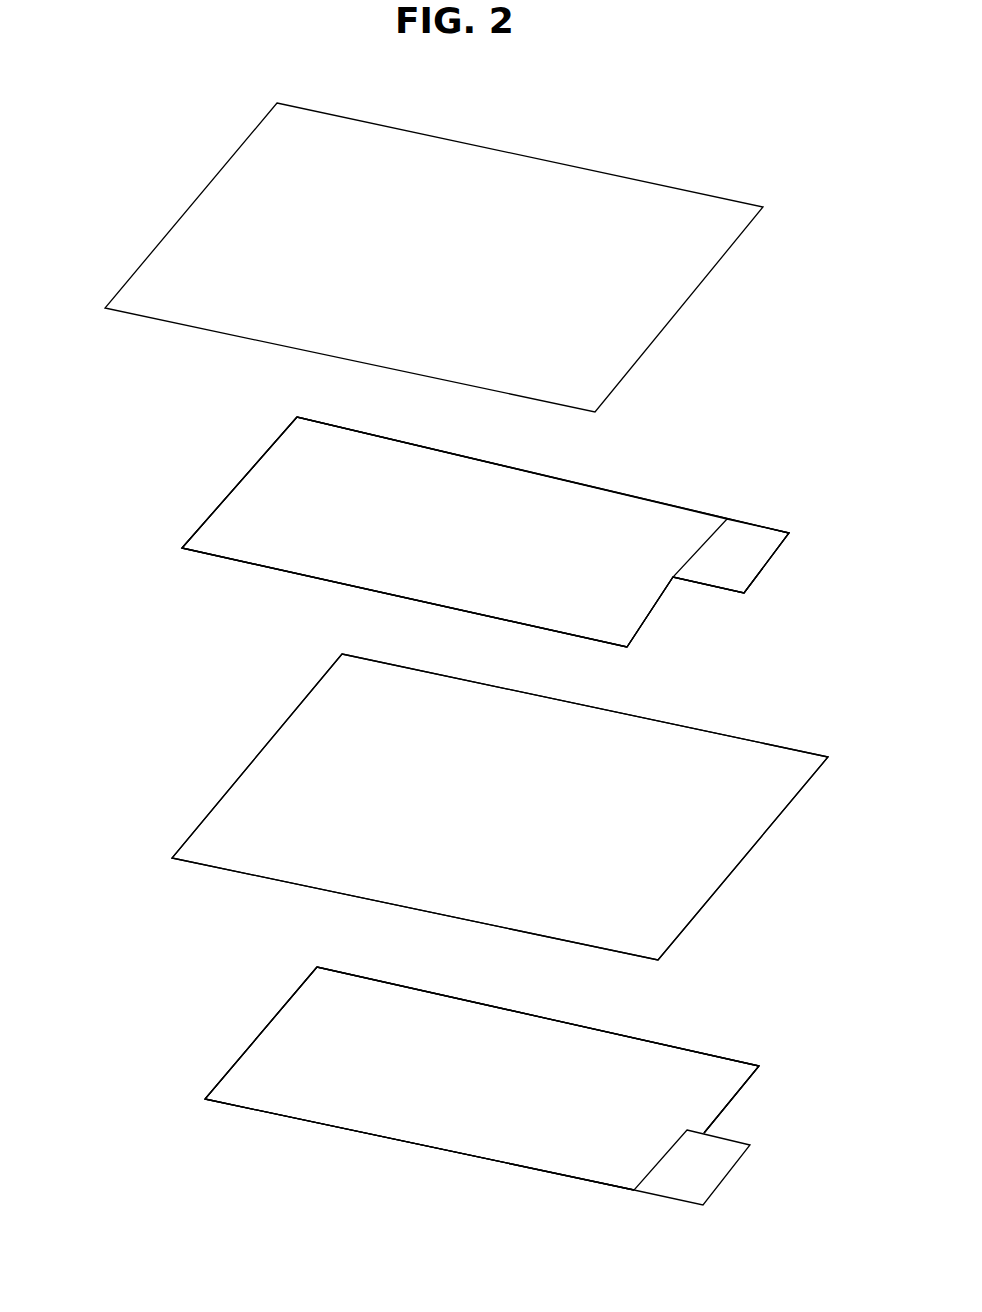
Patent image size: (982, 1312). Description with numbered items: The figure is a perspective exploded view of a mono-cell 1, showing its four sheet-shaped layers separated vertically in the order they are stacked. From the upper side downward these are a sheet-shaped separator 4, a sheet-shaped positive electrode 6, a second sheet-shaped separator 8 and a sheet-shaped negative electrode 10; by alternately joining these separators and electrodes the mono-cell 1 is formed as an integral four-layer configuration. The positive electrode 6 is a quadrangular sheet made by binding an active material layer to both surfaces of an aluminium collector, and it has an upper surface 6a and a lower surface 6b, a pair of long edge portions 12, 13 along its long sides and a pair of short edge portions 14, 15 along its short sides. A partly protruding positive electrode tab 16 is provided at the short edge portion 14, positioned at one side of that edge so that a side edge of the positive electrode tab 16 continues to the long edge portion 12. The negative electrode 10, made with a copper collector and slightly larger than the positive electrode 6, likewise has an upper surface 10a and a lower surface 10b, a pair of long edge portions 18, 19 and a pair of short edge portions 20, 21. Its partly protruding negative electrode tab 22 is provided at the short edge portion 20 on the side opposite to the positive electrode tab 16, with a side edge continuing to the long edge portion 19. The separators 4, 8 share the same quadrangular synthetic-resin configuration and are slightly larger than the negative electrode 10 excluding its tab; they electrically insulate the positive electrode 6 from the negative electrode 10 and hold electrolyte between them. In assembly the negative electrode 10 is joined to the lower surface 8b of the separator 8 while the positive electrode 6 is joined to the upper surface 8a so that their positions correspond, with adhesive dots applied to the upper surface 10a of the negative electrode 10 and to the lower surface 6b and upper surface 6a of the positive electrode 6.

The mono-cell 1 is at (768, 165).
The separator 4 is at (240, 165).
The positive electrode 6 is at (214, 532).
The upper surface of the positive electrode 6a is at (485, 532).
The lower surface of the positive electrode 6b is at (228, 557).
The separator 8 is at (275, 768).
The upper surface of the separator 8a is at (500, 807).
The lower surface of the separator 8b is at (230, 870).
The negative electrode 10 is at (235, 1087).
The upper surface of the negative electrode 10a is at (482, 1078).
The lower surface of the negative electrode 10b is at (255, 1112).
The long edge portion 12 is at (627, 490).
The long edge portion 13 is at (357, 590).
The short edge portion 14 is at (650, 620).
The short edge portion 15 is at (268, 447).
The positive electrode tab 16 is at (755, 562).
The long edge portion 18 is at (650, 1040).
The long edge portion 19 is at (320, 1123).
The short edge portion 20 is at (735, 1098).
The short edge portion 21 is at (265, 1025).
The negative electrode tab 22 is at (705, 1175).